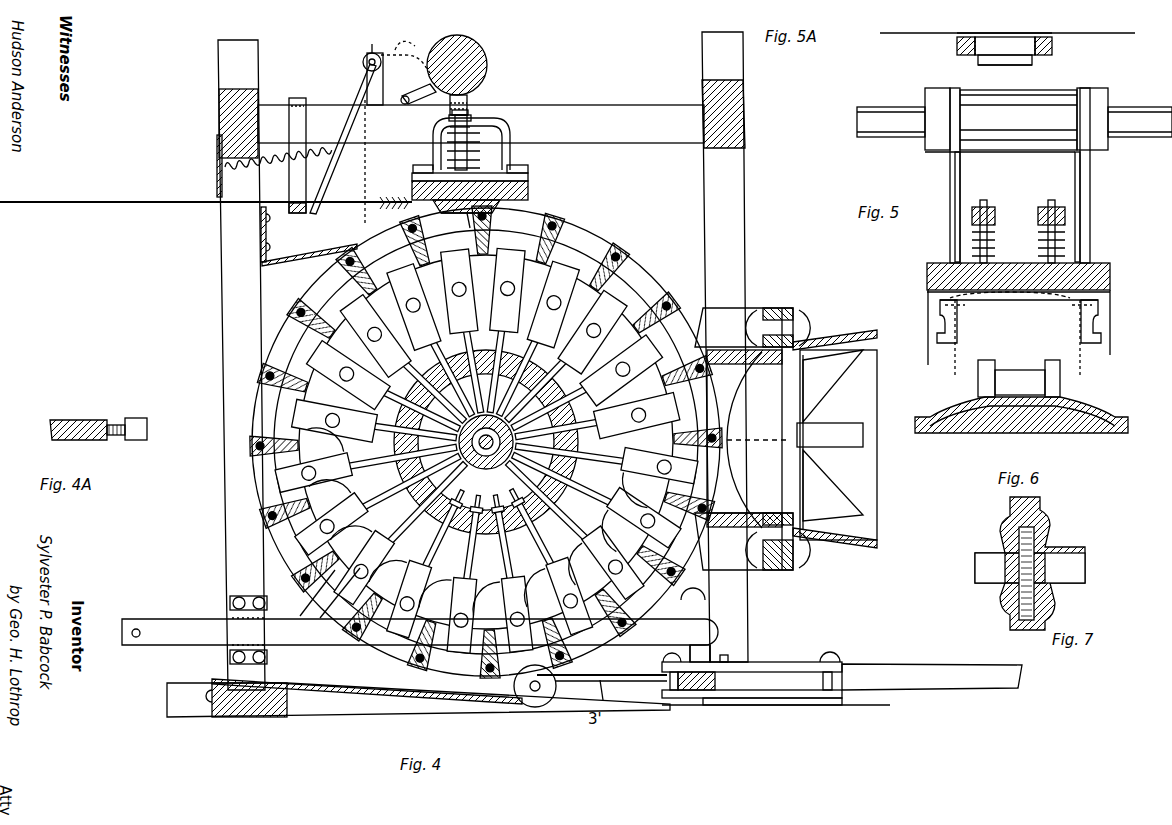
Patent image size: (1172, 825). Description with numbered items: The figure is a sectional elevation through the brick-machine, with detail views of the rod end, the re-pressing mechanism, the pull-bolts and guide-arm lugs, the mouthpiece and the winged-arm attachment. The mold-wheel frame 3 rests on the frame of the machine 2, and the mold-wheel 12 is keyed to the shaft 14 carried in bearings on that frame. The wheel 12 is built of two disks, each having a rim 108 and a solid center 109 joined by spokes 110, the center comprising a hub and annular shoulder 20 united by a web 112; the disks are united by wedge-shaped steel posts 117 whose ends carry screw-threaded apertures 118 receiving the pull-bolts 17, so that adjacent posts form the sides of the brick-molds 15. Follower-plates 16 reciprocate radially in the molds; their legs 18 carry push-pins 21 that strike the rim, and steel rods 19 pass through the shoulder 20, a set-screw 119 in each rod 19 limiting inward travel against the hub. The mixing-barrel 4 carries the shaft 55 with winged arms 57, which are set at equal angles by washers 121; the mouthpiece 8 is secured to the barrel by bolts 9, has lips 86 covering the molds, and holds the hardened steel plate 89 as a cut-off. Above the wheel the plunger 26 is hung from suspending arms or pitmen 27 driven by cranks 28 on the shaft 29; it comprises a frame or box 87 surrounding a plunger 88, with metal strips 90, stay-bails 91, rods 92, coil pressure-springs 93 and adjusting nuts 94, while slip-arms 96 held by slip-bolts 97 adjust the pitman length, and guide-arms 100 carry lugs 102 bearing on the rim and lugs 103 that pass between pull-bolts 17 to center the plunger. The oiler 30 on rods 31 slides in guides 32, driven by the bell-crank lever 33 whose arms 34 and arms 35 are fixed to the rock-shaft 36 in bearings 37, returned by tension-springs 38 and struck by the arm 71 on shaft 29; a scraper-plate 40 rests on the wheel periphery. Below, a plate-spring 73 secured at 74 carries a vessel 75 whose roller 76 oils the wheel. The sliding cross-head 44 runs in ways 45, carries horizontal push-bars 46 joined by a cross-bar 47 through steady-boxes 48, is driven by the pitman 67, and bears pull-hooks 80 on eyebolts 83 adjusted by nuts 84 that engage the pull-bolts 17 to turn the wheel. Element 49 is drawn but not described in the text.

In FIG. 4, the frame of the machine 2 is at (776, 713).
In FIG. 4, the frame of the mold-wheel 3 is at (482, 361).
In FIG. 4, the mixing-barrel 4 is at (835, 439).
In FIG. 4, the mouthpiece of the mixing-barrel 8 is at (749, 439).
In FIG. 6, the mouthpiece of the mixing-barrel 8 is at (1021, 415).
In FIG. 4, the bolts 9 is at (784, 439).
In FIG. 4, the mold-wheel 12 is at (486, 442).
In FIG. 5A, the mold-wheel 12 is at (1004, 21).
In FIG. 5, the mold-wheel 12 is at (1019, 332).
In FIG. 4, the shaft 14 is at (490, 445).
In FIG. 4, the brick-molds 15 is at (517, 354).
In FIG. 4, the follower-plates 16 is at (575, 358).
In FIG. 5A, the pull-bolts 17 is at (1066, 50).
In FIG. 5, the pull-bolts 17 is at (1010, 304).
In FIG. 4, the legs 18 is at (547, 445).
In FIG. 4A, the steel rods 19 is at (87, 418).
In FIG. 4, the annular shoulder 20 is at (486, 442).
In FIG. 4, the push-pins 21 is at (482, 356).
In FIG. 4, the plunger 26 is at (467, 189).
In FIG. 4, the suspending arms or pitmen 27 is at (450, 114).
In FIG. 5, the suspending arms or pitmen 27 is at (950, 178).
In FIG. 5, the cranks 28 is at (1016, 109).
In FIG. 4, the shaft 29 is at (478, 72).
In FIG. 5, the shaft 29 is at (996, 120).
In FIG. 4, the oiler 30 is at (386, 162).
In FIG. 4, the rods 31 is at (206, 214).
In FIG. 4, the guides 32 is at (250, 162).
In FIG. 4, the bell-crank lever 33 is at (359, 61).
In FIG. 4, the arms 34 is at (343, 139).
In FIG. 4, the arms 35 is at (403, 48).
In FIG. 4, the rock-shaft 36 is at (362, 41).
In FIG. 4, the bearings 37 is at (387, 79).
In FIG. 4, the tension-springs 38 is at (278, 168).
In FIG. 4, the scraper-plate 40 is at (309, 245).
In FIG. 4, the sliding cross-head 44 is at (711, 681).
In FIG. 4, the ways 45 is at (752, 664).
In FIG. 4, the horizontal push-bar 46 is at (420, 632).
In FIG. 4, the cross-bar 47 is at (149, 633).
In FIG. 4, the steady-boxes 48 is at (248, 621).
In FIG. 4, the brace 49 is at (319, 593).
In FIG. 4, the shaft 55 is at (830, 435).
In FIG. 7, the shaft 55 is at (1030, 568).
In FIG. 4, the winged arms 57 is at (833, 435).
In FIG. 7, the winged arms 57 is at (1022, 563).
In FIG. 4, the pitman 67 is at (932, 677).
In FIG. 4, the arm 71 is at (418, 87).
In FIG. 4, the plate-spring 73 is at (418, 700).
In FIG. 4, the securing point of plate-spring 74 is at (210, 682).
In FIG. 4, the vessel 75 is at (396, 691).
In FIG. 4, the roller 76 is at (540, 700).
In FIG. 4, the pull-hooks 80 is at (602, 669).
In FIG. 4, the eyebolts 83 is at (720, 625).
In FIG. 4, the nuts 84 is at (702, 651).
In FIG. 4, the lips 86 is at (744, 439).
In FIG. 6, the lips 86 is at (1019, 378).
In FIG. 4, the frame or box 87 is at (510, 198).
In FIG. 5A, the frame or box 87 is at (1028, 65).
In FIG. 5, the frame or box 87 is at (1013, 268).
In FIG. 4, the plunger 88 is at (454, 224).
In FIG. 5, the plunger 88 is at (1021, 243).
In FIG. 4, the hardened steel plate 89 is at (766, 439).
In FIG. 4, the metal strips 90 is at (512, 172).
In FIG. 5, the metal strips 90 is at (1026, 225).
In FIG. 4, the stay-bails 91 is at (482, 112).
In FIG. 5, the stay-bails 91 is at (1024, 198).
In FIG. 4, the rods 92 is at (473, 112).
In FIG. 5, the rods 92 is at (1021, 187).
In FIG. 4, the coil pressure-spring 93 is at (474, 142).
In FIG. 5, the coil pressure-spring 93 is at (972, 234).
In FIG. 4, the nuts 94 is at (447, 129).
In FIG. 5, the nuts 94 is at (995, 216).
In FIG. 5, the slip-arms 96 is at (1041, 207).
In FIG. 5, the slip-bolts 97 is at (1017, 197).
In FIG. 5, the guide-arms 100 is at (938, 322).
In FIG. 5, the lugs 102 is at (1029, 344).
In FIG. 5A, the lugs 103 is at (975, 37).
In FIG. 5, the lugs 103 is at (1018, 337).
In FIG. 4, the rim 108 is at (518, 432).
In FIG. 5A, the rim 108 is at (1005, 50).
In FIG. 4, the solid center 109 is at (590, 390).
In FIG. 4, the spokes 110 is at (486, 365).
In FIG. 4, the web 112 is at (418, 420).
In FIG. 4, the wedge-shaped steel posts 117 is at (599, 230).
In FIG. 4, the screw-threaded apertures 118 is at (615, 260).
In FIG. 4, the set-screw 119 is at (440, 393).
In FIG. 4A, the set-screw 119 is at (150, 414).
In FIG. 7, the washers 121 is at (1045, 590).